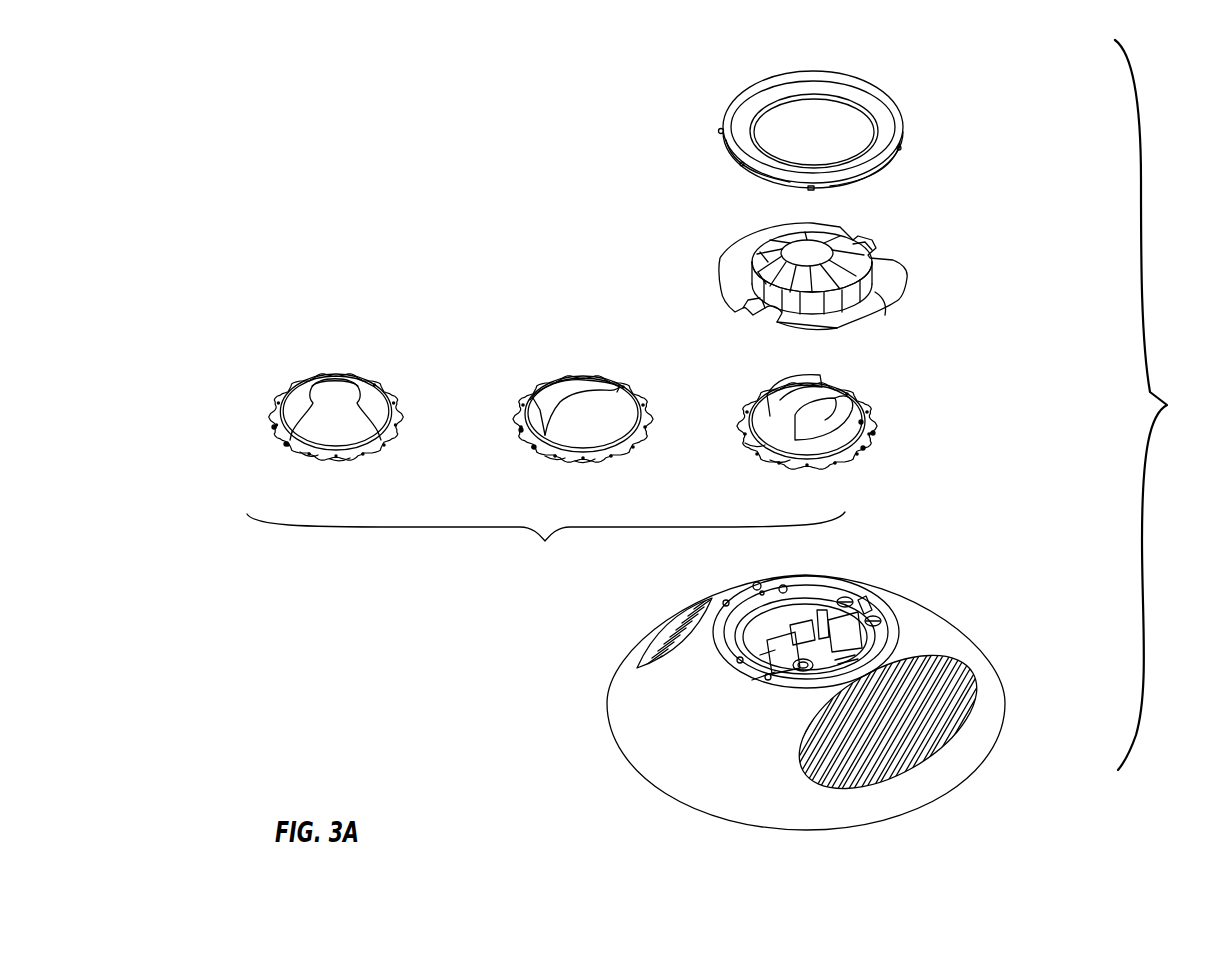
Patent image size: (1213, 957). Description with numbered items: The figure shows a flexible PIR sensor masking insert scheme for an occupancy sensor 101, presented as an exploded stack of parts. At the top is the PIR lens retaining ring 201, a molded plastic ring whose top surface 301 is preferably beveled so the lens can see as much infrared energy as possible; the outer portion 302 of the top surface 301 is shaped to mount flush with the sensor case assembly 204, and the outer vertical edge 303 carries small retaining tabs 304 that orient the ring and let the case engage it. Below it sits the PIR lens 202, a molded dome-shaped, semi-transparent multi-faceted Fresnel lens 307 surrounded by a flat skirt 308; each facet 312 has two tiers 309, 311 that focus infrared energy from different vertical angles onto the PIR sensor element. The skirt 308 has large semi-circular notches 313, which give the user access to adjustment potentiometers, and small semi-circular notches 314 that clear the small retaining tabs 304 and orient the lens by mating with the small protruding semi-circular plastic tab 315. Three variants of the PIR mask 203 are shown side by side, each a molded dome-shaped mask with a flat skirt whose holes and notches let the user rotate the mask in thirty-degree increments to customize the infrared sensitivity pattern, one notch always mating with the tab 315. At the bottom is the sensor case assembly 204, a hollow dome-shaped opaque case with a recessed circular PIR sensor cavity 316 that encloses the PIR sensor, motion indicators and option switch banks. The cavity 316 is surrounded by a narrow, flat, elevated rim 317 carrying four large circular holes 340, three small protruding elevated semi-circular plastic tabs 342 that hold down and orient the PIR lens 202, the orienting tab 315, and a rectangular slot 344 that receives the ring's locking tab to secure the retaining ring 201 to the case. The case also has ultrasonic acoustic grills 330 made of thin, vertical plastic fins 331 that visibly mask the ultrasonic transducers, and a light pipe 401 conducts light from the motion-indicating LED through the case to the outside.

The vehicle air freshener assembly 101 is at (1164, 405).
The PIR lens retaining ring 201 is at (880, 85).
The PIR lens 202 is at (905, 282).
The PIR mask 203 is at (546, 546).
The sensor case assembly 204 is at (626, 770).
The top surface 301 is at (750, 108).
The outer portion 302 is at (727, 155).
The outer vertical edge 303 is at (893, 165).
The small retaining tabs 304 is at (720, 130).
The multi-faceted Fresnel lens 307 is at (803, 252).
The flat skirt 308 is at (870, 305).
The tier 309 is at (853, 258).
The tier 311 is at (860, 270).
The facet 312 is at (760, 282).
The large semi-circular notches 313 is at (772, 305).
The small semi-circular notches 314 is at (832, 327).
The small protruding semi-circular plastic tab 315 is at (757, 583).
The recessed circular PIR sensor cavity 316 is at (718, 653).
The narrow, flat, elevated rim 317 is at (723, 600).
The ultrasonic acoustic grill 330 is at (643, 648).
The thin, vertical plastic fins 331 is at (902, 788).
The large circular holes 340 is at (878, 619).
The small protruding elevated semi-circular plastic tabs 342 is at (800, 578).
The rectangular slot 344 is at (877, 600).
The light pipe 401 is at (937, 751).